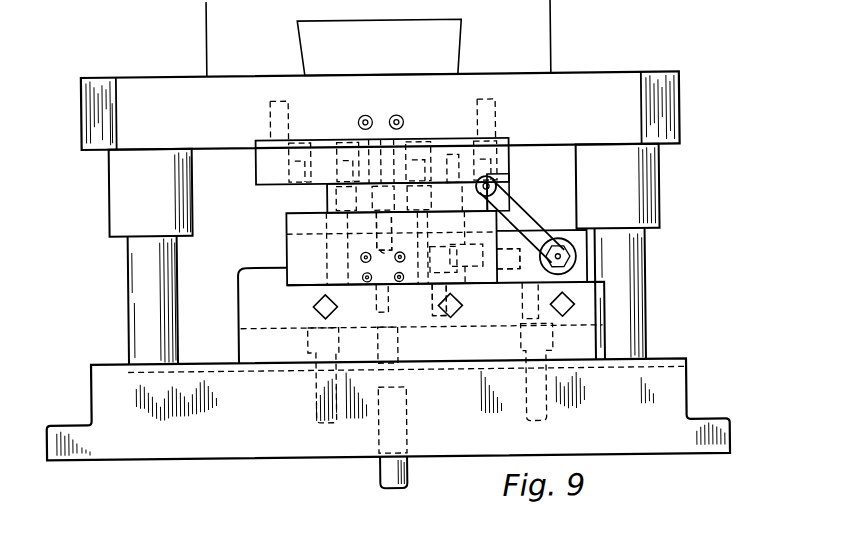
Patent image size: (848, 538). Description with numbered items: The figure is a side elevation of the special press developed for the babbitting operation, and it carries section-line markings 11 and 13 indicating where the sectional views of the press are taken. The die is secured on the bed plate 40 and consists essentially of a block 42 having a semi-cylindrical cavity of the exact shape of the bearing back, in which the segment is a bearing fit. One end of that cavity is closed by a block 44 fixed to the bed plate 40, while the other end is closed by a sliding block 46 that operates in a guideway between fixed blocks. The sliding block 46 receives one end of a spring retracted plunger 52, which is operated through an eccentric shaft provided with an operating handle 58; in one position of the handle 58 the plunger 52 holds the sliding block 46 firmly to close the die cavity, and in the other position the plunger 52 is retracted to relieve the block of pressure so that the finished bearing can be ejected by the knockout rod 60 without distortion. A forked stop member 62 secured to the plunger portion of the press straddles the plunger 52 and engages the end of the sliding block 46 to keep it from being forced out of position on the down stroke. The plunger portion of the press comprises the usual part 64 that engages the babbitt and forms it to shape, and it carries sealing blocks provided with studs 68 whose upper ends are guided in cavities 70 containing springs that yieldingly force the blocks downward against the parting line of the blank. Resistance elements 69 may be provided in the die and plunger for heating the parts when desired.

The bed plate 40 is at (255, 444).
The block 42 is at (345, 286).
The block 44 is at (298, 250).
The sliding block 46 is at (436, 286).
The plunger 52 is at (548, 282).
The operating handle 58 is at (514, 214).
The knockout rod 60 is at (407, 476).
The forked stop member 62 is at (492, 280).
The plunger portion 64 is at (357, 250).
The studs 68 is at (327, 197).
The resistance elements 69 is at (397, 114).
The cavities 70 is at (338, 152).
The section line 11- 11 is at (773, 42).
The section line 13- 13 is at (107, 246).